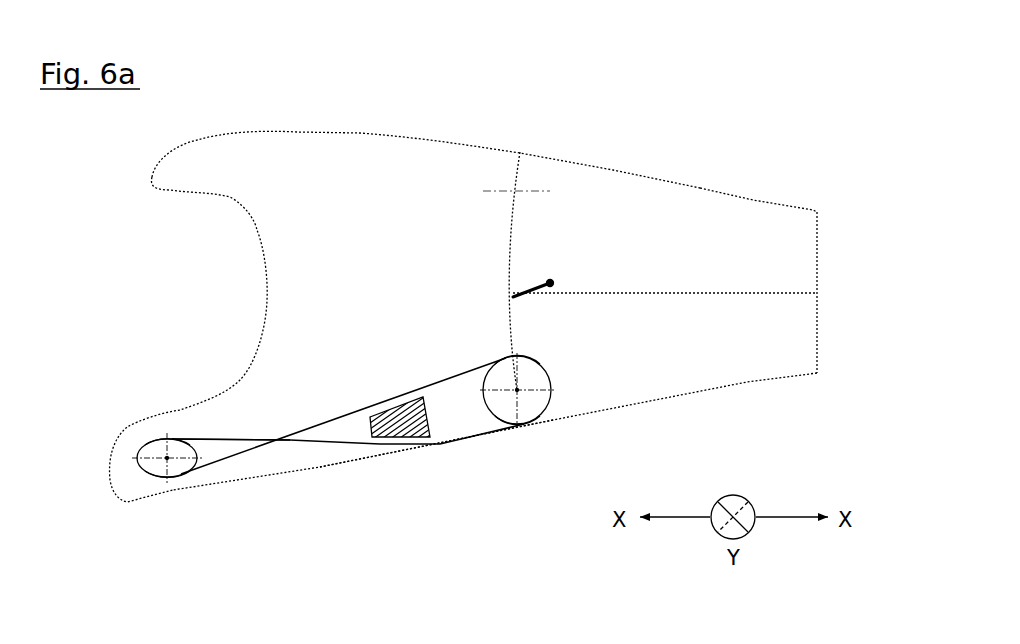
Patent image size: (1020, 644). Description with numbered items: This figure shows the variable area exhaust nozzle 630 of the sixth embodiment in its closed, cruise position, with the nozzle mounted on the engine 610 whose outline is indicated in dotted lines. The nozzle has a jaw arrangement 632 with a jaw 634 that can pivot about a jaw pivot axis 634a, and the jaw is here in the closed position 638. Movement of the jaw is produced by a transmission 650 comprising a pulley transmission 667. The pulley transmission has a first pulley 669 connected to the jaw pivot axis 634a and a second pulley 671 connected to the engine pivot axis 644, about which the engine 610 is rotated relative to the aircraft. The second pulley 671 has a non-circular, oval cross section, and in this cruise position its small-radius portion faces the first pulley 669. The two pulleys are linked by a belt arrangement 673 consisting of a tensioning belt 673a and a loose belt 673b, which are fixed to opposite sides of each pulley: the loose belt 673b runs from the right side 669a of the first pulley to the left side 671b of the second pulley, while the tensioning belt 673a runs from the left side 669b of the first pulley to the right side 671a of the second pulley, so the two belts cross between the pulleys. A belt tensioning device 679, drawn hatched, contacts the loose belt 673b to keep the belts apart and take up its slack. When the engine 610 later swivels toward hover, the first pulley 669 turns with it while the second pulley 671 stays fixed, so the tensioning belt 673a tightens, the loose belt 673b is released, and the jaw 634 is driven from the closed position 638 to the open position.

The engine 610 is at (472, 270).
The variable area exhaust nozzle 630 is at (519, 264).
The jaw arrangement 632 is at (659, 152).
The jaw 634 is at (759, 196).
The jaw pivot axis 634a is at (525, 399).
The closed position 638 is at (824, 316).
The engine pivot axis 644 is at (170, 466).
The transmission 650 is at (363, 464).
The pulley transmission 667 is at (301, 454).
The first pulley 669 is at (552, 373).
The right side of first pulley 669a is at (523, 355).
The left side of first pulley 669b is at (527, 429).
The second pulley 671 is at (139, 447).
The right side of second pulley 671a is at (168, 437).
The left side of second pulley 671b is at (165, 482).
The belt arrangement 673 is at (348, 420).
The tensioning belt 673a is at (456, 366).
The loose belt 673b is at (491, 440).
The belt tensioning device 679 is at (424, 442).